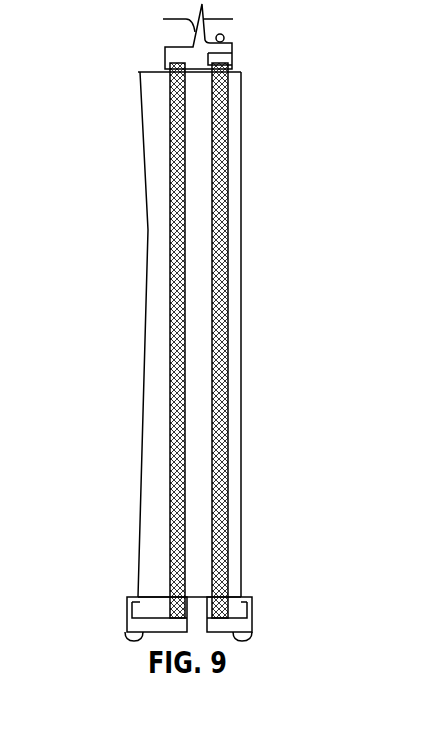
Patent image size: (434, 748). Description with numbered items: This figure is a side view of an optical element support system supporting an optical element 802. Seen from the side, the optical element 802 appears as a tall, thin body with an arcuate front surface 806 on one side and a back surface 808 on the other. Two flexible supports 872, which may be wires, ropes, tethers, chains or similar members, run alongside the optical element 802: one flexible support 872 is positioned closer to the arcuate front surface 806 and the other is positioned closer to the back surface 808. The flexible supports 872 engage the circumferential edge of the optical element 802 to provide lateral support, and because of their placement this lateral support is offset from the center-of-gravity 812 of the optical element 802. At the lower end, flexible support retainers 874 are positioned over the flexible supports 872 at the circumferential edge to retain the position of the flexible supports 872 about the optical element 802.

The optical element 802 is at (157, 93).
The arcuate front surface 806 is at (143, 175).
The back surface 808 is at (242, 120).
The center-of-gravity 812 is at (197, 293).
The flexible support 872 is at (180, 340).
The flexible support retainer 874 is at (128, 640).